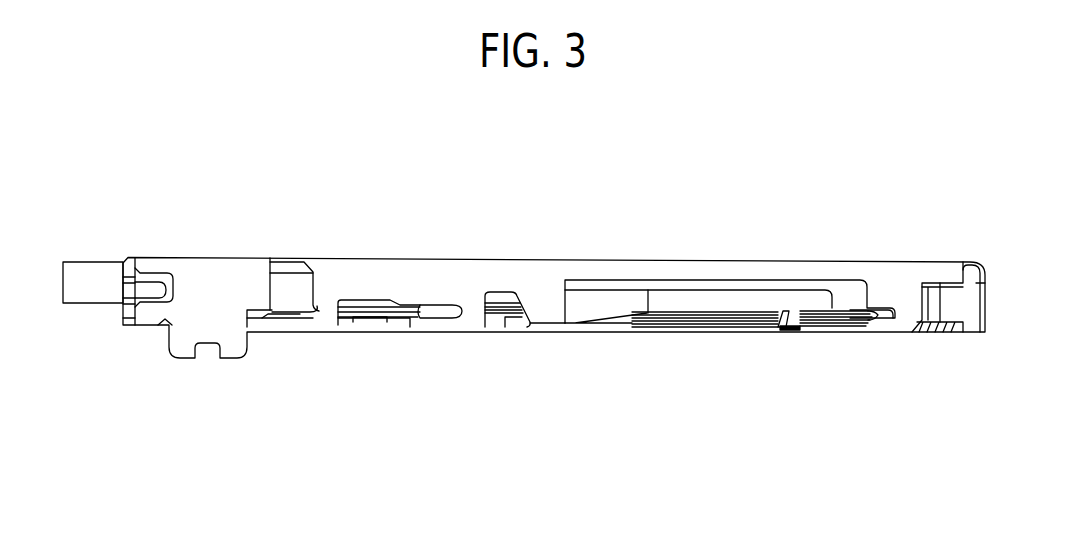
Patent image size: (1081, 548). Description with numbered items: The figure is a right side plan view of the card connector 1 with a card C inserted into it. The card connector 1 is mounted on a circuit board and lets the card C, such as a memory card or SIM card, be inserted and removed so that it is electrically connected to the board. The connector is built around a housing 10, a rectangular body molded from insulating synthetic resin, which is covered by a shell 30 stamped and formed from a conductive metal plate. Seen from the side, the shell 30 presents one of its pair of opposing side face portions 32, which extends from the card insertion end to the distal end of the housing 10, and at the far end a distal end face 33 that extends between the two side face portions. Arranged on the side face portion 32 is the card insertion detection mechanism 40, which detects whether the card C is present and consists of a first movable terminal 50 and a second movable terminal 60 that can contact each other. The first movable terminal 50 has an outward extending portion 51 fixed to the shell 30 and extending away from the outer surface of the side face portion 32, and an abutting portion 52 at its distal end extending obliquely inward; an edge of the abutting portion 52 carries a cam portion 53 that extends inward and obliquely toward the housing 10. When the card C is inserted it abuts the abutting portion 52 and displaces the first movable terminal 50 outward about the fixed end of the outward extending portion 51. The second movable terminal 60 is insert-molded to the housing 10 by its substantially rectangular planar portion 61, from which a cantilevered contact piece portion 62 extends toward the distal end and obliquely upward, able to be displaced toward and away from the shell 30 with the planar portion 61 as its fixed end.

The card connector 1 is at (922, 204).
The card C is at (87, 272).
The housing 10 is at (532, 329).
The shell 30 is at (610, 252).
The side face portion 32 is at (418, 273).
The distal end face 33 is at (985, 308).
The card insertion detection mechanism 40 is at (729, 322).
The first movable terminal 50 is at (752, 297).
The outward extending portion 51 is at (670, 298).
The abutting portion 52 is at (788, 300).
The cam portion 53 is at (813, 328).
The second movable terminal 60 is at (677, 297).
The planar portion 61 is at (665, 328).
The contact piece portion 62 is at (781, 311).